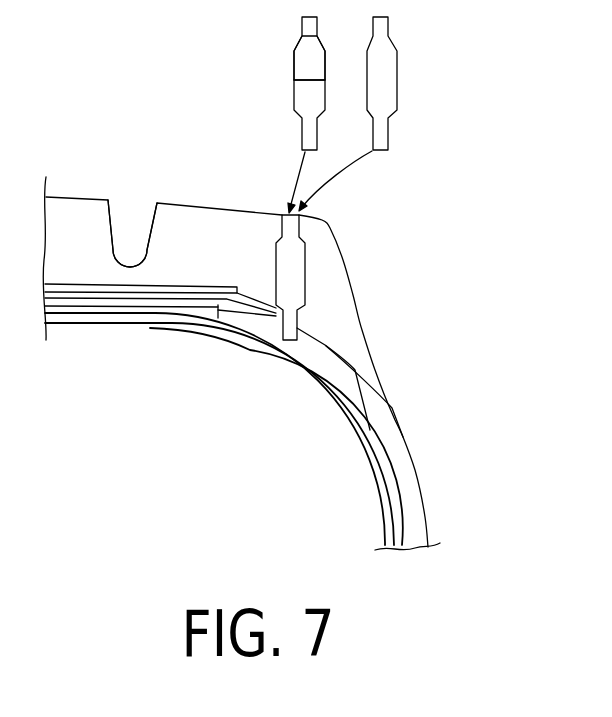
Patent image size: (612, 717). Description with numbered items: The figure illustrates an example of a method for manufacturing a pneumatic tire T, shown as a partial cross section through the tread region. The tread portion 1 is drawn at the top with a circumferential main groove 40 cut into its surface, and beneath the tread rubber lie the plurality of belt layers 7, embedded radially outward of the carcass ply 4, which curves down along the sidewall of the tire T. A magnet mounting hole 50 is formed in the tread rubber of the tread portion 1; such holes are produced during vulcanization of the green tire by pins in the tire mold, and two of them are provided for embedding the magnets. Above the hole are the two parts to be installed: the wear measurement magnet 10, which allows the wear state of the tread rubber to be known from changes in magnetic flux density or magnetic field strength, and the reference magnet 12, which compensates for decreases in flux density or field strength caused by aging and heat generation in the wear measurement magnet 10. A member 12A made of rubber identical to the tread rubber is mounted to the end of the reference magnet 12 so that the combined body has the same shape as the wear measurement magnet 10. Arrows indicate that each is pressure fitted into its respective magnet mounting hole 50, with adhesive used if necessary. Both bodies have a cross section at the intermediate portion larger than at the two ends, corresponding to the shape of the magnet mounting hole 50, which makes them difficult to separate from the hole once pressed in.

The tread portion 1 is at (196, 196).
The circumferential main groove 40 is at (132, 220).
The magnet mounting hole 50 is at (293, 225).
The reference magnet 12 is at (306, 97).
The member 12A is at (306, 63).
The wear measurement magnet 10 is at (382, 80).
The belt layers 7 is at (95, 287).
The carcass ply 4 is at (353, 409).
The pneumatic tire T is at (391, 308).